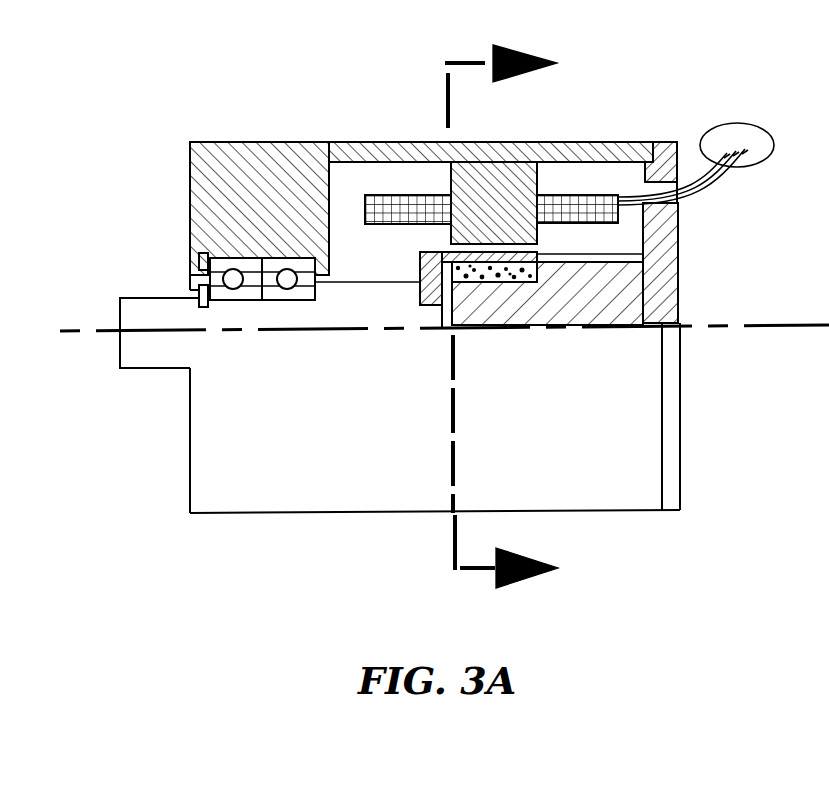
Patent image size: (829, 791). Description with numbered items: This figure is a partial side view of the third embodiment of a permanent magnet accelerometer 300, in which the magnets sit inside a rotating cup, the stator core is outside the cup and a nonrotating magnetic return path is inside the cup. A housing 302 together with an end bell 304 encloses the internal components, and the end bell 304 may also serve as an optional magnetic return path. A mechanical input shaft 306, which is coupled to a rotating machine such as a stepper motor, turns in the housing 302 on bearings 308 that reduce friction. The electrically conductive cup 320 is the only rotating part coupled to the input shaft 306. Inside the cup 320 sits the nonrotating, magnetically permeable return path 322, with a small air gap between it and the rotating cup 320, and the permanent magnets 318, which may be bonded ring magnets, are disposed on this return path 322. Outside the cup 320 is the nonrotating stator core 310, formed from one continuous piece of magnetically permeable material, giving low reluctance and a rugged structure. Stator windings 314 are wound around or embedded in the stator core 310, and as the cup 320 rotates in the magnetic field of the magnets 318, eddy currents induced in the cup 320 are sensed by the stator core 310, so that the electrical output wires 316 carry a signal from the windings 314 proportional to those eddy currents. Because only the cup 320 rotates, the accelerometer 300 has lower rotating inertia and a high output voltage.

The accelerometer 300 is at (572, 646).
The housing 302 is at (215, 150).
The end bell 304 is at (683, 507).
The mechanical input shaft 306 is at (117, 308).
The bearings 308 is at (250, 305).
The stator core 310 is at (485, 185).
The stator windings 314 is at (578, 192).
The electrical output wires 316 is at (748, 124).
The permanent magnets 318 is at (497, 283).
The cup 320 is at (643, 255).
The magnetic return path 322 is at (660, 310).